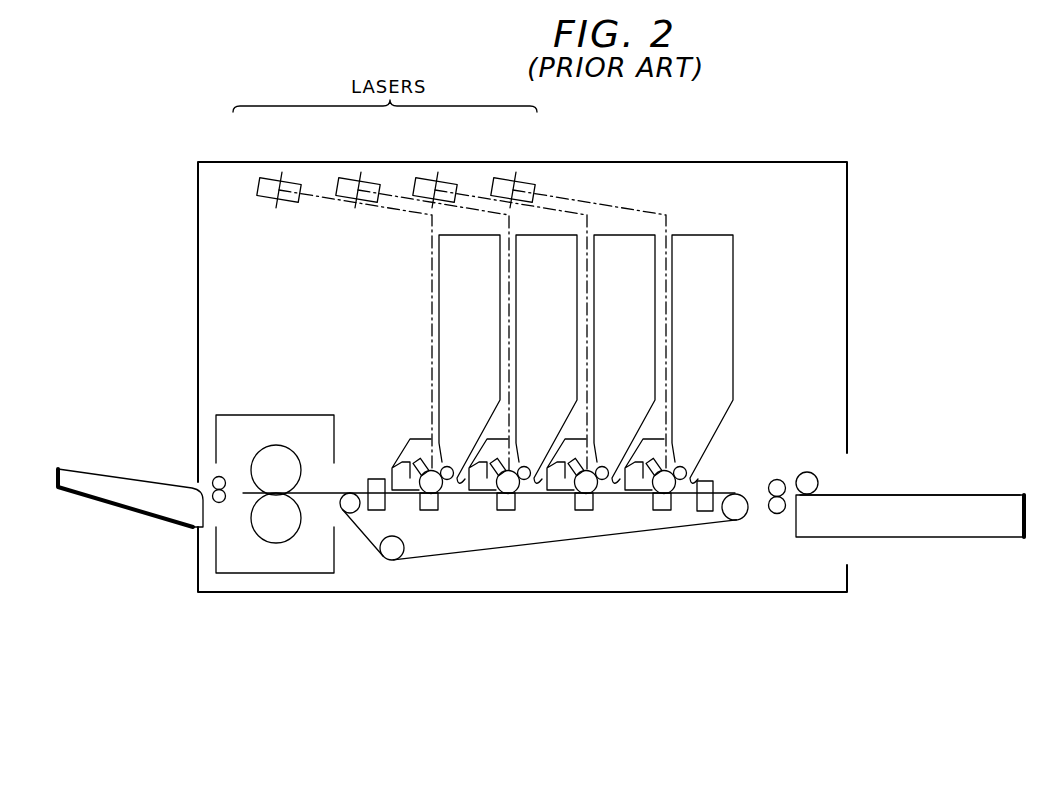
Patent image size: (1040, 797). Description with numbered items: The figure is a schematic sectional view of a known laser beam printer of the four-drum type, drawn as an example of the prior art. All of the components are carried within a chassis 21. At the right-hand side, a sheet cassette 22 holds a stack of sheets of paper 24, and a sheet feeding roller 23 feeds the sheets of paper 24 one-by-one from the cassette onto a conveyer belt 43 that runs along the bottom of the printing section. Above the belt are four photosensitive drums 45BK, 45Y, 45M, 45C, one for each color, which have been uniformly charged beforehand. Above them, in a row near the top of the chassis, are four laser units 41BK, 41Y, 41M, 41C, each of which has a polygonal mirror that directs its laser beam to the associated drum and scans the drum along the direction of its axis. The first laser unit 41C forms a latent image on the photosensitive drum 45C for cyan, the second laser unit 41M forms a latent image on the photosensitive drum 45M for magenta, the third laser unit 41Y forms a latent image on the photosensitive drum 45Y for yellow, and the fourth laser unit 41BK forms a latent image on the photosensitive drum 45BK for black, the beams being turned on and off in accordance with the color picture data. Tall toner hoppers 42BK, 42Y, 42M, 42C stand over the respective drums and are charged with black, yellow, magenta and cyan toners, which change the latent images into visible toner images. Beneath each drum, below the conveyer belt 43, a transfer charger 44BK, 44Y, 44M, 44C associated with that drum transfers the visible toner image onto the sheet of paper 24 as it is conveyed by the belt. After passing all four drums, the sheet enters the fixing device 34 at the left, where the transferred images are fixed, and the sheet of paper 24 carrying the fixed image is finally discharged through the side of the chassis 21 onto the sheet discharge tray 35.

The chassis 21 is at (793, 161).
The sheet cassette 22 is at (910, 537).
The sheet feeding roller 23 is at (803, 472).
The sheet of paper 24 is at (919, 500).
The fixing device 34 is at (276, 543).
The sheet discharge tray 35 is at (118, 481).
The fourth laser unit 41BK is at (267, 177).
The third laser unit 41Y is at (346, 177).
The second laser unit 41M is at (425, 177).
The first laser unit 41C is at (503, 177).
The toner hopper 42BK is at (449, 270).
The toner hopper 42Y is at (527, 330).
The toner hopper 42M is at (645, 263).
The toner hopper 42C is at (710, 312).
The conveyer belt 43 is at (714, 520).
The transfer charger 44BK is at (430, 497).
The transfer charger 44Y is at (507, 497).
The transfer charger 44M is at (587, 497).
The transfer charger 44C is at (662, 497).
The photosensitive drum 45BK is at (431, 478).
The photosensitive drum 45Y is at (508, 478).
The photosensitive drum 45M is at (586, 478).
The photosensitive drum 45C is at (664, 478).